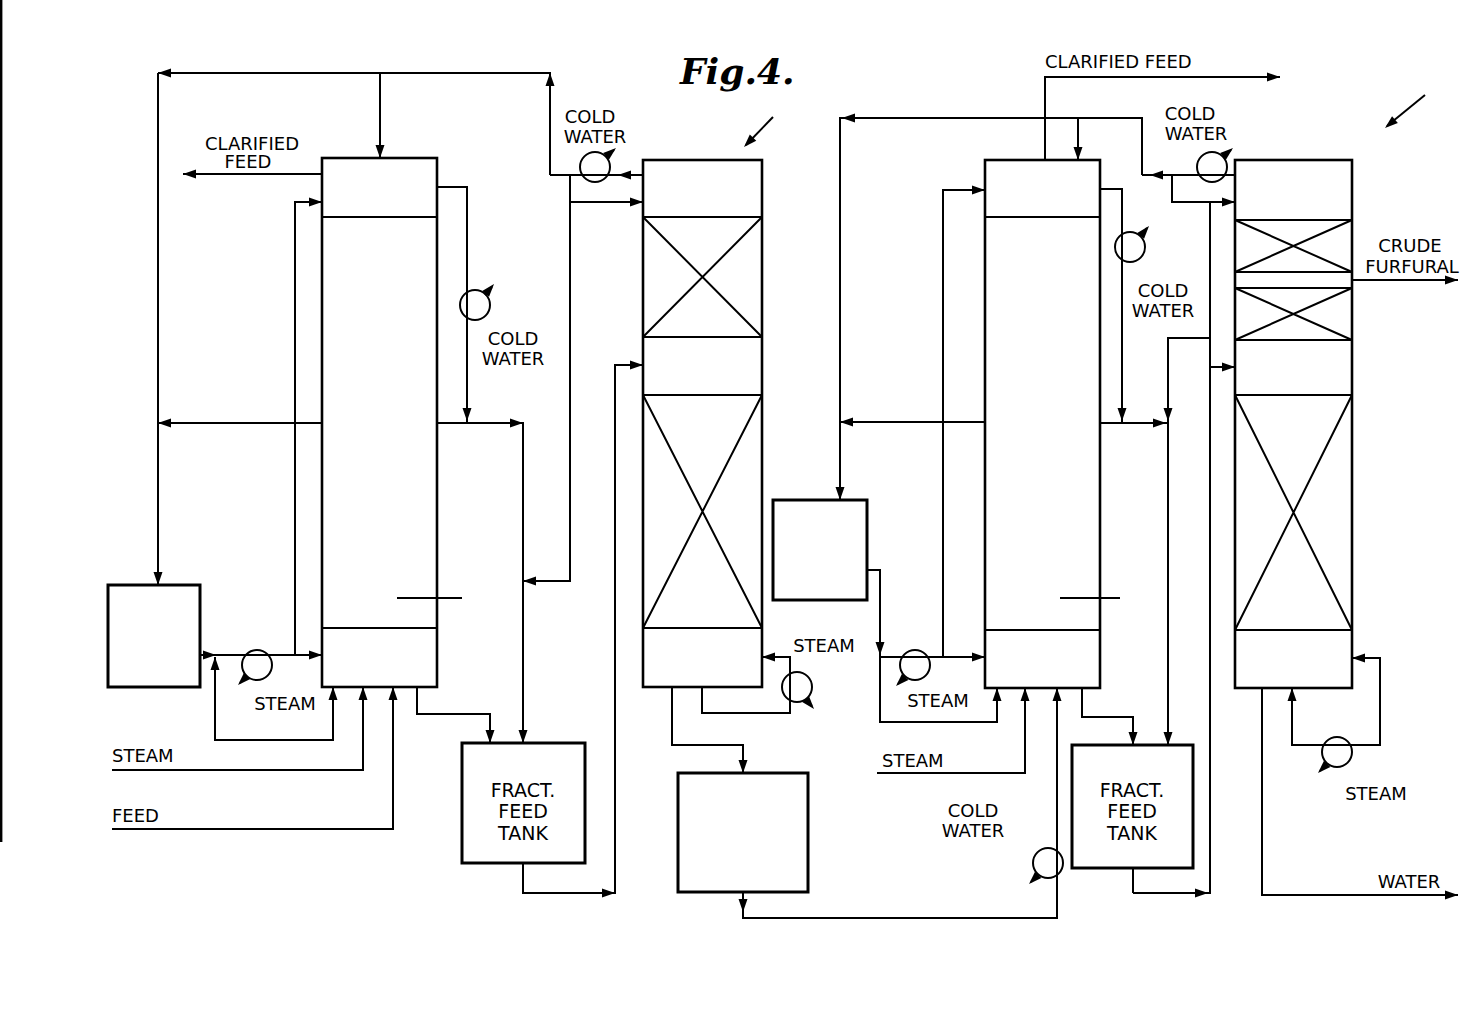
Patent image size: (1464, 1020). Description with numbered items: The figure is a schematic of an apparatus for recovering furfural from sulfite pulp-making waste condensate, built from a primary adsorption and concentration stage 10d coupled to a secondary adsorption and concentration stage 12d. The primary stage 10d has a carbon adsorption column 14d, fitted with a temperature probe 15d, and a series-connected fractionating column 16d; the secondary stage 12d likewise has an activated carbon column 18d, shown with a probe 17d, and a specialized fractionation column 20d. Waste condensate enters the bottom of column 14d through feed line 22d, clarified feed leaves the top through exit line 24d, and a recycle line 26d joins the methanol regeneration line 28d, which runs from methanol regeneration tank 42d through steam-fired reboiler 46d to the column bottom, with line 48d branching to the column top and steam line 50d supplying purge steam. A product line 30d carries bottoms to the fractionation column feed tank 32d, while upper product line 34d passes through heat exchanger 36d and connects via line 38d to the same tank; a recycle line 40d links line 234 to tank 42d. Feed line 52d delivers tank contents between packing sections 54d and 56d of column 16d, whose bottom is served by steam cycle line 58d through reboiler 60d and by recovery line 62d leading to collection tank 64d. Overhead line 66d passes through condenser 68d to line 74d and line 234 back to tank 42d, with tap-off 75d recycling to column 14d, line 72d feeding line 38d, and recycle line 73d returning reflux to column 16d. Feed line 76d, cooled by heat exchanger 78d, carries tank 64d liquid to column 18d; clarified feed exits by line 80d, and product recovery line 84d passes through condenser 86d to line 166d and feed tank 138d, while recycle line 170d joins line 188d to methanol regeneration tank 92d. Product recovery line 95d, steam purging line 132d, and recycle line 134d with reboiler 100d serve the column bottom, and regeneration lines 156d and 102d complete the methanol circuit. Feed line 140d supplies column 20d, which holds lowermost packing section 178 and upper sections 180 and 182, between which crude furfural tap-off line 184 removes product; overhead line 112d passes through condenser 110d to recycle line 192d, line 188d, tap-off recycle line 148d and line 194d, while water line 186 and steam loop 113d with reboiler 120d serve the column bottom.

The primary adsorption and concentration stage 10d is at (779, 124).
The secondary adsorption and concentration stage 12d is at (1421, 99).
The carbon adsorption column 14d is at (462, 146).
The temperature probe 15d is at (448, 598).
The fractionating column 16d is at (755, 190).
The carbon bed level 17d is at (1108, 598).
The activated carbon column 18d is at (985, 170).
The fractionation column 20d is at (1355, 190).
The feed line 22d is at (243, 832).
The exit line 24d is at (214, 176).
The recycle line 26d is at (252, 742).
The methanol regeneration line 28d is at (223, 655).
The product line 30d is at (433, 717).
The fractionation column feed tank 32d is at (540, 742).
The upper product line 34d is at (505, 222).
The heat exchanger 36d is at (490, 305).
The line 38d is at (523, 477).
The recycle line 40d is at (212, 422).
The methanol regeneration tank 42d is at (177, 587).
The steam-fired reboiler 46d is at (253, 650).
The line 48d is at (293, 492).
The steam line 50d is at (207, 772).
The fractionation column feed line 52d is at (612, 615).
The packing section 54d is at (755, 275).
The packing section 56d is at (750, 457).
The steam cycle line 58d is at (772, 715).
The steam-fired reboiler 60d is at (812, 687).
The recovery line 62d is at (688, 745).
The collection tank 64d is at (808, 828).
The line 66d is at (637, 173).
The condenser 68d is at (578, 166).
The line 72d is at (572, 323).
The recycle line 73d is at (612, 203).
The line 74d is at (498, 73).
The tap-off 75d is at (382, 96).
The feed line 76d is at (902, 917).
The heat exchanger 78d is at (1034, 863).
The clarified feed line 80d is at (1245, 76).
The product recovery line 84d is at (1135, 185).
The condenser 86d is at (1145, 246).
The methanol regeneration tank 92d is at (850, 498).
The product recovery line 95d is at (1128, 704).
The steam-fired reboiler 100d is at (913, 650).
The secondary regeneration line 102d is at (940, 472).
The condenser 110d is at (1197, 162).
The line 112d is at (1225, 172).
The steam loop 113d is at (1380, 675).
The reboiler 120d is at (1352, 753).
The steam purging line 132d is at (958, 778).
The recycle line 134d is at (928, 737).
The feed tank 138d is at (1108, 868).
The feed line 140d is at (1210, 763).
The tap-off recycle line 148d is at (1078, 124).
The methanol regeneration line 156d is at (877, 570).
The line 166d is at (1165, 515).
The recycle line 170d is at (888, 420).
The lowermost packing section 178 is at (1343, 538).
The uppermost packing section 180 is at (1345, 237).
The uppermost packing section 182 is at (1345, 322).
The crude furfural tap-off line 184 is at (1425, 283).
The water line 186 is at (1300, 895).
The line 188d is at (841, 300).
The recycle line 192d is at (1172, 203).
The line 194d is at (1165, 370).
The line 234 is at (158, 297).